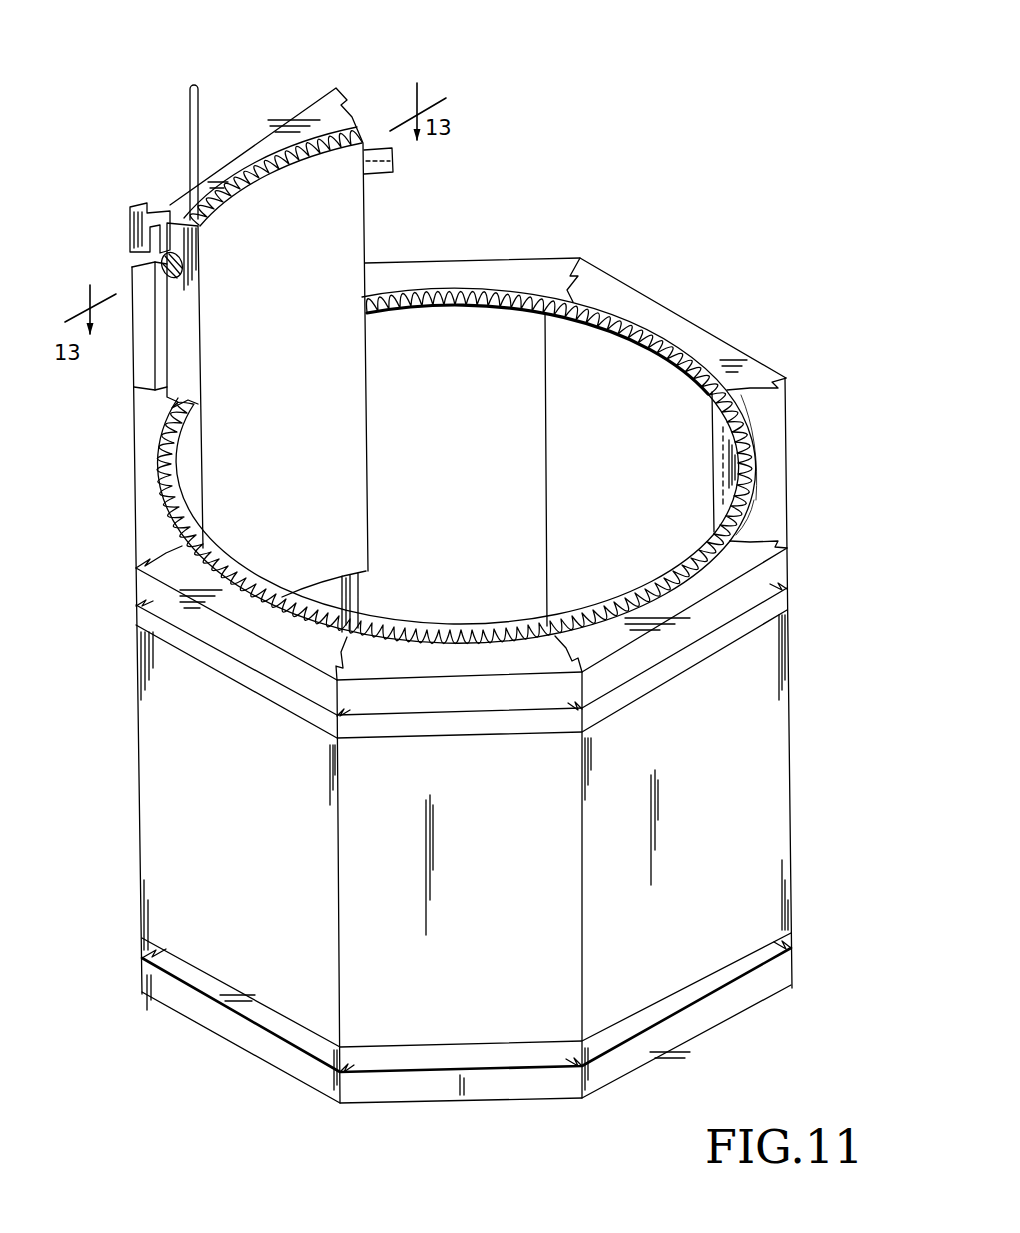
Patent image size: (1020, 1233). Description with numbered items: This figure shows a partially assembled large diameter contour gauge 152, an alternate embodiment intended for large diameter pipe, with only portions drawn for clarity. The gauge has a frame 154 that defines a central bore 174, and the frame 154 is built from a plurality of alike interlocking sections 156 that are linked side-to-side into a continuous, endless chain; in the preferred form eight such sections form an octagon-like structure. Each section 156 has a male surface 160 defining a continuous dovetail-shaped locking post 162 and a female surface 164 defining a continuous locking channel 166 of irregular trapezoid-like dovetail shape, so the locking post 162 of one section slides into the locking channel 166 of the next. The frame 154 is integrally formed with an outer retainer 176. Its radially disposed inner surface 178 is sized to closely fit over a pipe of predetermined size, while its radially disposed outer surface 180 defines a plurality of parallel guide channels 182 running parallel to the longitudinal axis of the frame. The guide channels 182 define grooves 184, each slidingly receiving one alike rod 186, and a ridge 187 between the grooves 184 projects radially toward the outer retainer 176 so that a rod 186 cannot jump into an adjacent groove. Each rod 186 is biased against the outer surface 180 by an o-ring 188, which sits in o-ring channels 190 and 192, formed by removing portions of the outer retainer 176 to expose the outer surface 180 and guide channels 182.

The large diameter contour gauge 152 is at (706, 146).
The frame 154 is at (462, 311).
The interlocking section 156 is at (808, 347).
The male surface 160 is at (349, 71).
The locking post 162 is at (352, 104).
The female surface 164 is at (120, 348).
The locking channel 166 is at (150, 356).
The bore 174 is at (681, 412).
The outer retainer 176 is at (539, 262).
The inner surface 178 is at (477, 443).
The outer surface 180 is at (689, 355).
The guide channel 182 is at (758, 456).
The groove 184 is at (754, 518).
The rod 186 is at (190, 106).
The ridge 187 is at (613, 298).
The o-ring 188 is at (388, 176).
The o-ring channel 190 is at (130, 247).
The o-ring channel 192 is at (247, 996).